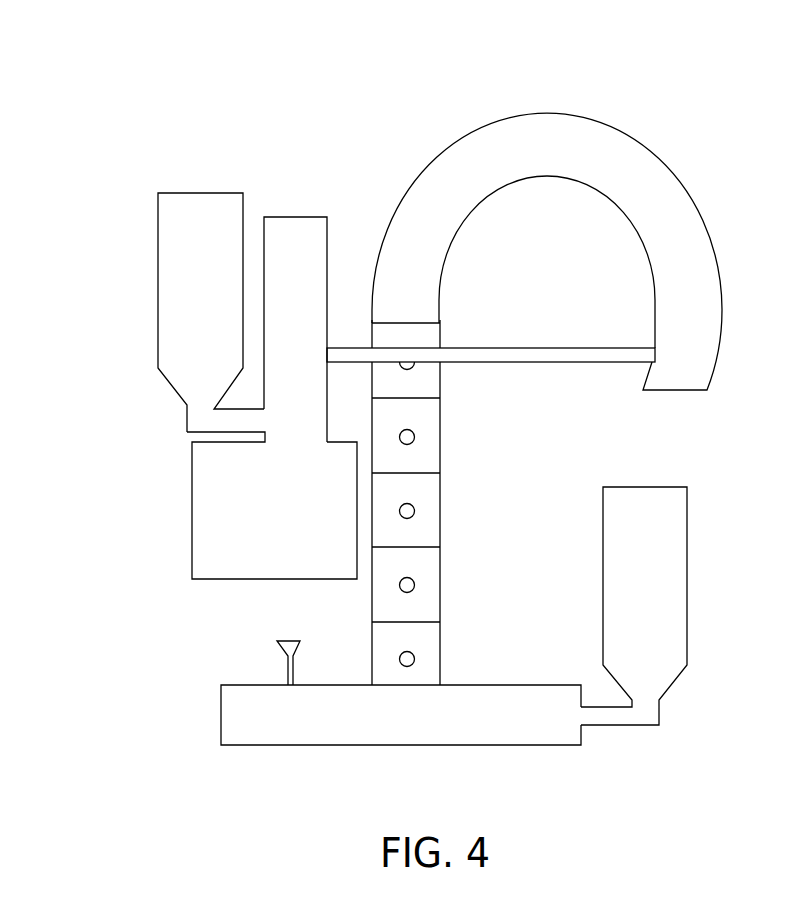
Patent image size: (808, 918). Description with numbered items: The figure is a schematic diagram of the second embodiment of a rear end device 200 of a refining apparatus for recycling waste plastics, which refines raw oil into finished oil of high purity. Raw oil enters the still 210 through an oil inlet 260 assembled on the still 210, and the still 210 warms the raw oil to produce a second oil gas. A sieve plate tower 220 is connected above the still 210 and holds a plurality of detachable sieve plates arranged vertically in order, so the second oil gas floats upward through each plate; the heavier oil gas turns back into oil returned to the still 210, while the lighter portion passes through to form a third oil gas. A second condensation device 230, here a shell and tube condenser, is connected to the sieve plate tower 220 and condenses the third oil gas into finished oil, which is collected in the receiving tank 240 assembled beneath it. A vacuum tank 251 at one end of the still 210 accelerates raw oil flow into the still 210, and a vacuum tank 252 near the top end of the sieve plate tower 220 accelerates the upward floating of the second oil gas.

The rear end device 200 is at (705, 122).
The still 210 is at (526, 728).
The sieve plate tower 220 is at (382, 660).
The second condensation device 230 is at (293, 227).
The receiving tank 240 is at (205, 517).
The vacuum tank 251 is at (677, 562).
The vacuum tank 252 is at (207, 202).
The oil inlet 260 is at (283, 652).